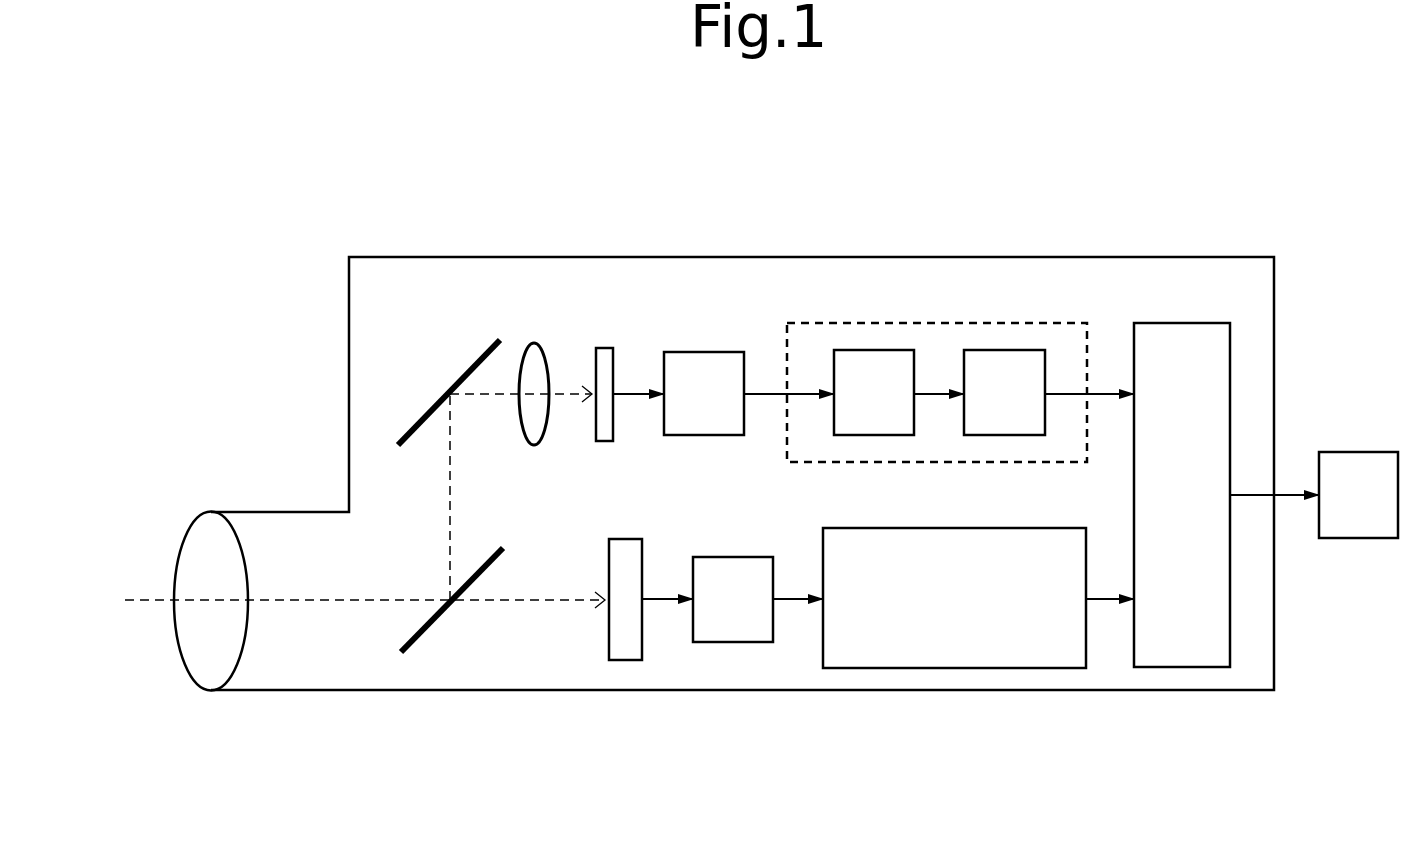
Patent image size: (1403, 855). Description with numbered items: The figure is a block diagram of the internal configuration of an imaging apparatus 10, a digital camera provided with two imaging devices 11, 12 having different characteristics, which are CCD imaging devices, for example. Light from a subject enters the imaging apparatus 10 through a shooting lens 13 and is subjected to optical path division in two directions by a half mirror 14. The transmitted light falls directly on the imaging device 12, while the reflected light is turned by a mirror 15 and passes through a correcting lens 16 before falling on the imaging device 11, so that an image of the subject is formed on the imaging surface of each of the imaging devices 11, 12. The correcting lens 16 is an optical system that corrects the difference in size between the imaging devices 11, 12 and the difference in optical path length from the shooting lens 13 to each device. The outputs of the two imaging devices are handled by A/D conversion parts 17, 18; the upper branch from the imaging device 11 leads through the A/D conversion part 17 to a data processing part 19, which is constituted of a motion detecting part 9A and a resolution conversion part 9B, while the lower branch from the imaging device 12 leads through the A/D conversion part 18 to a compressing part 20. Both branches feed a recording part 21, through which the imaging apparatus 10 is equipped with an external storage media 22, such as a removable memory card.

The imaging apparatus 10 is at (283, 210).
The imaging device 11 is at (604, 350).
The imaging device 12 is at (624, 550).
The shooting lens 13 is at (186, 570).
The half mirror 14 is at (414, 634).
The mirror 15 is at (480, 352).
The correcting lens 16 is at (534, 445).
The A/D conversion part 17 is at (729, 410).
The A/D conversion part 18 is at (757, 615).
The data processing part 19 is at (916, 324).
The motion detecting part 9A is at (900, 408).
The resolution conversion part 9B is at (1030, 408).
The compressing part 20 is at (980, 613).
The recording part 21 is at (1208, 510).
The external storage media 22 is at (1384, 506).